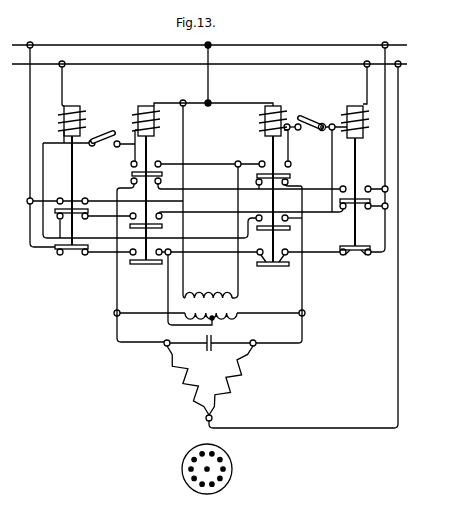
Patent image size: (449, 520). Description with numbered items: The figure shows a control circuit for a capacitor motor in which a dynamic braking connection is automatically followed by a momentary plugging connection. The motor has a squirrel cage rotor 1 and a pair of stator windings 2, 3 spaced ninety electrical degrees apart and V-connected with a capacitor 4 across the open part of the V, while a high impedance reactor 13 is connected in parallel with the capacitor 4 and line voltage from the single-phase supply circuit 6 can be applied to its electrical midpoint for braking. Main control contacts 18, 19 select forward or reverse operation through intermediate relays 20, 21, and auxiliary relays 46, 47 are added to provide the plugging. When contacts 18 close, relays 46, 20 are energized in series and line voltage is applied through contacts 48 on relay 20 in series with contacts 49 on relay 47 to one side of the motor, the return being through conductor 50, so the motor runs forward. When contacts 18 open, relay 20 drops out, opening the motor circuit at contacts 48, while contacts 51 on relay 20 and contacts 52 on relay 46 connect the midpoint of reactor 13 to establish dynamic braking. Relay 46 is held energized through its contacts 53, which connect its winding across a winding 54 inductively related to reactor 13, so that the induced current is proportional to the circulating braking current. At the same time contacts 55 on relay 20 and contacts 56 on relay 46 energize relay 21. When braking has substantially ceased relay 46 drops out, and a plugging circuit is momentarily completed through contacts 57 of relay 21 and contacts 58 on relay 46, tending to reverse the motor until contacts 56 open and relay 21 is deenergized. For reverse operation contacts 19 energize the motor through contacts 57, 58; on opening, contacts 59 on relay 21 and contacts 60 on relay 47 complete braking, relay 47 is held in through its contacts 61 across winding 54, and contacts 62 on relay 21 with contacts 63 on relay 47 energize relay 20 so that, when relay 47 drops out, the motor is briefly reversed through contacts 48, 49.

The rotor 1 is at (233, 467).
The stator winding 2 is at (182, 383).
The stator winding 3 is at (233, 382).
The capacitor 4 is at (208, 353).
The single-phase alternating current supply circuit 6 is at (93, 62).
The reactor 13 is at (223, 316).
The main control contacts 18 is at (98, 139).
The main control contacts 19 is at (311, 118).
The intermediate relay 20 is at (76, 105).
The intermediate relay 21 is at (354, 105).
The auxiliary relay 46 is at (146, 105).
The auxiliary relay 47 is at (275, 105).
The contacts 48 is at (63, 199).
The contacts 49 is at (272, 180).
The conductor 50 is at (313, 428).
The contacts 51 is at (80, 253).
The contacts 52 is at (150, 253).
The contacts 53 is at (147, 161).
The winding 54 is at (210, 295).
The contacts 55 is at (77, 219).
The contacts 56 is at (162, 218).
The contacts 57 is at (368, 186).
The contacts 58 is at (152, 182).
The contacts 59 is at (354, 255).
The contacts 60 is at (272, 266).
The contacts 61 is at (272, 160).
The contacts 62 is at (354, 207).
The contacts 63 is at (276, 228).